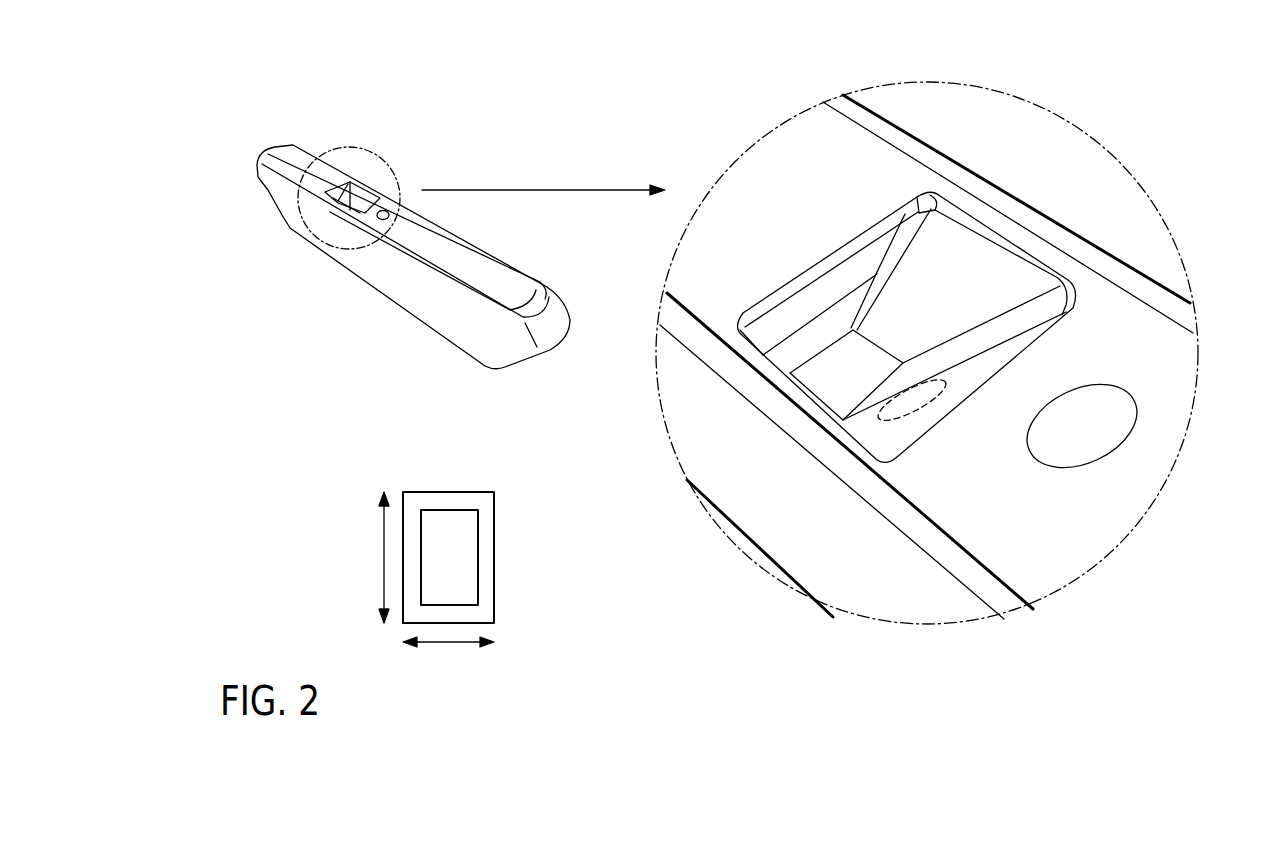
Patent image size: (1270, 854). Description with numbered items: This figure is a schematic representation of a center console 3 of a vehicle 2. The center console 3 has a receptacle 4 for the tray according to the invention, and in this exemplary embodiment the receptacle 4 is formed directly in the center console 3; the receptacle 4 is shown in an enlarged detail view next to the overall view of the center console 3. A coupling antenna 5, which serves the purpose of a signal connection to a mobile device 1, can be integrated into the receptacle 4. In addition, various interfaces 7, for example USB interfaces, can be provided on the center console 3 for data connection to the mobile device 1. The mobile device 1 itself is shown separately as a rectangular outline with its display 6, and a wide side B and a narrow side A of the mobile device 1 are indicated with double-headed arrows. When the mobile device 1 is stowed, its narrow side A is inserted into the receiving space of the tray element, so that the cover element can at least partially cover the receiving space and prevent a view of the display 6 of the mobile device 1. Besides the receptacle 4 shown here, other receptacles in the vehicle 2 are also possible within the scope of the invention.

The mobile device 1 is at (444, 491).
The vehicle 2 is at (355, 357).
The center console 3 is at (503, 258).
The receptacle 4 is at (930, 283).
The coupling antenna 5 is at (947, 379).
The display 6 is at (478, 556).
The interfaces 7 is at (1108, 421).
The narrow side A is at (440, 642).
The wide side B is at (384, 538).